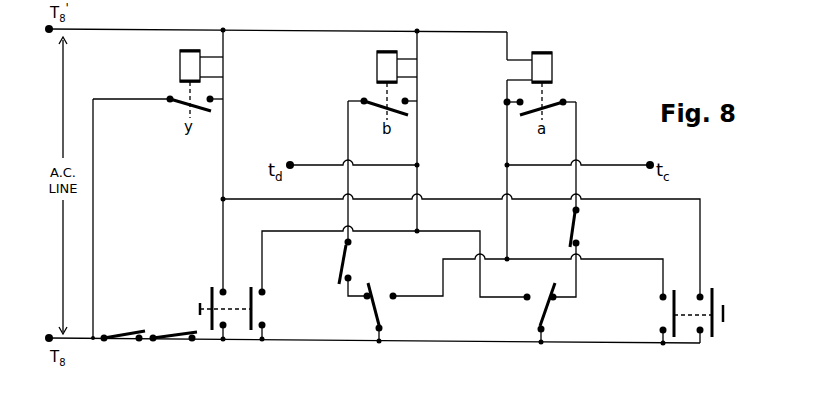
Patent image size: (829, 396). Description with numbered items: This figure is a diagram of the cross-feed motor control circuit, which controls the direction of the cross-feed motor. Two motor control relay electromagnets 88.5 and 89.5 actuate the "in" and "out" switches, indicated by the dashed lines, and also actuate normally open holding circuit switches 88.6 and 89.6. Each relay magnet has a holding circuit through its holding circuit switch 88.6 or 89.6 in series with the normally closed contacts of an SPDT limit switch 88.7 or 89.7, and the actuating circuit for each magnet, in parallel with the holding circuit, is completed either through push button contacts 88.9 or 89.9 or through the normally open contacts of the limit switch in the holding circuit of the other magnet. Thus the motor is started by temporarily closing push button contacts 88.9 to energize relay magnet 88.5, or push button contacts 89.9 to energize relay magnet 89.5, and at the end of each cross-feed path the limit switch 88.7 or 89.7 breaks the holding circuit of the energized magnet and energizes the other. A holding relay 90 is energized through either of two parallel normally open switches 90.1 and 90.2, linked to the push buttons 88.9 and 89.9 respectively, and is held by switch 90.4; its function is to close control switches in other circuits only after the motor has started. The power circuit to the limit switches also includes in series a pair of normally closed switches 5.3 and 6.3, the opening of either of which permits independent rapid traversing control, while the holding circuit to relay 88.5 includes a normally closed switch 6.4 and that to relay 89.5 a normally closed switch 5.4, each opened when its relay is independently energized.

The holding relay 90 is at (184, 67).
The holding circuit switch 90.4 is at (183, 99).
The motor control relay electromagnet 89.5 is at (378, 72).
The holding circuit switch 89.6 is at (364, 100).
The motor control relay electromagnet 88.5 is at (550, 72).
The holding circuit switch 88.6 is at (548, 99).
The normally open switch 90.2 is at (212, 298).
The push button contacts 89.9 is at (256, 307).
The normally closed switch 5.3 is at (120, 342).
The normally closed switch 6.3 is at (170, 343).
The normally closed switch 5.4 is at (341, 270).
The SPDT limit switch 89.7 is at (378, 290).
The normally closed switch 6.4 is at (579, 229).
The SPDT limit switch 88.7 is at (551, 312).
The push button contacts 88.9 is at (662, 313).
The normally open switch 90.1 is at (716, 329).